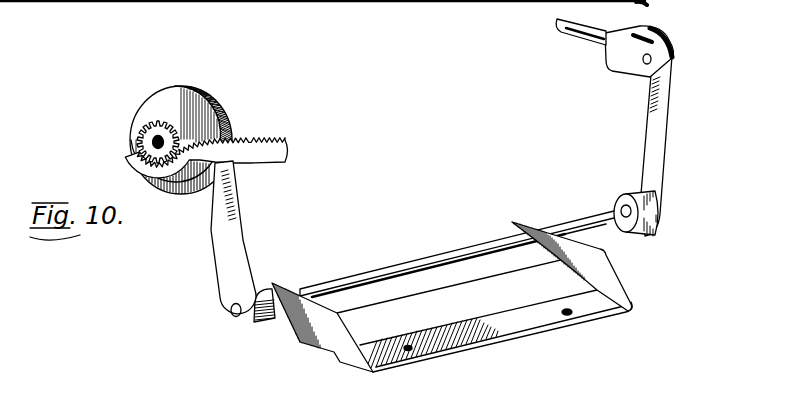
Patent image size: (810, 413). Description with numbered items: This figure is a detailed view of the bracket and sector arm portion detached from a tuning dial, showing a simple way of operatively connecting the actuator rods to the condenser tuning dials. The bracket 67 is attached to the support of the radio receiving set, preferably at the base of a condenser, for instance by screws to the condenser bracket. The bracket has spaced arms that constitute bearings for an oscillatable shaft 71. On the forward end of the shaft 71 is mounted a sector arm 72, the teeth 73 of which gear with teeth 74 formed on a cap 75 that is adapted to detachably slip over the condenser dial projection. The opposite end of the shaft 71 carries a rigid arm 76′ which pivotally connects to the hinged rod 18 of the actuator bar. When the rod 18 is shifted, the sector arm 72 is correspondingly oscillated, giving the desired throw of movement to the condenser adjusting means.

The hinged rod 18 is at (578, 40).
The bracket 67 is at (480, 343).
The oscillatable shaft 71 is at (398, 268).
The sector arm 72 is at (212, 238).
The teeth 73 is at (257, 143).
The teeth 74 is at (140, 134).
The cap 75 is at (210, 104).
The rigid arm 76' is at (661, 146).